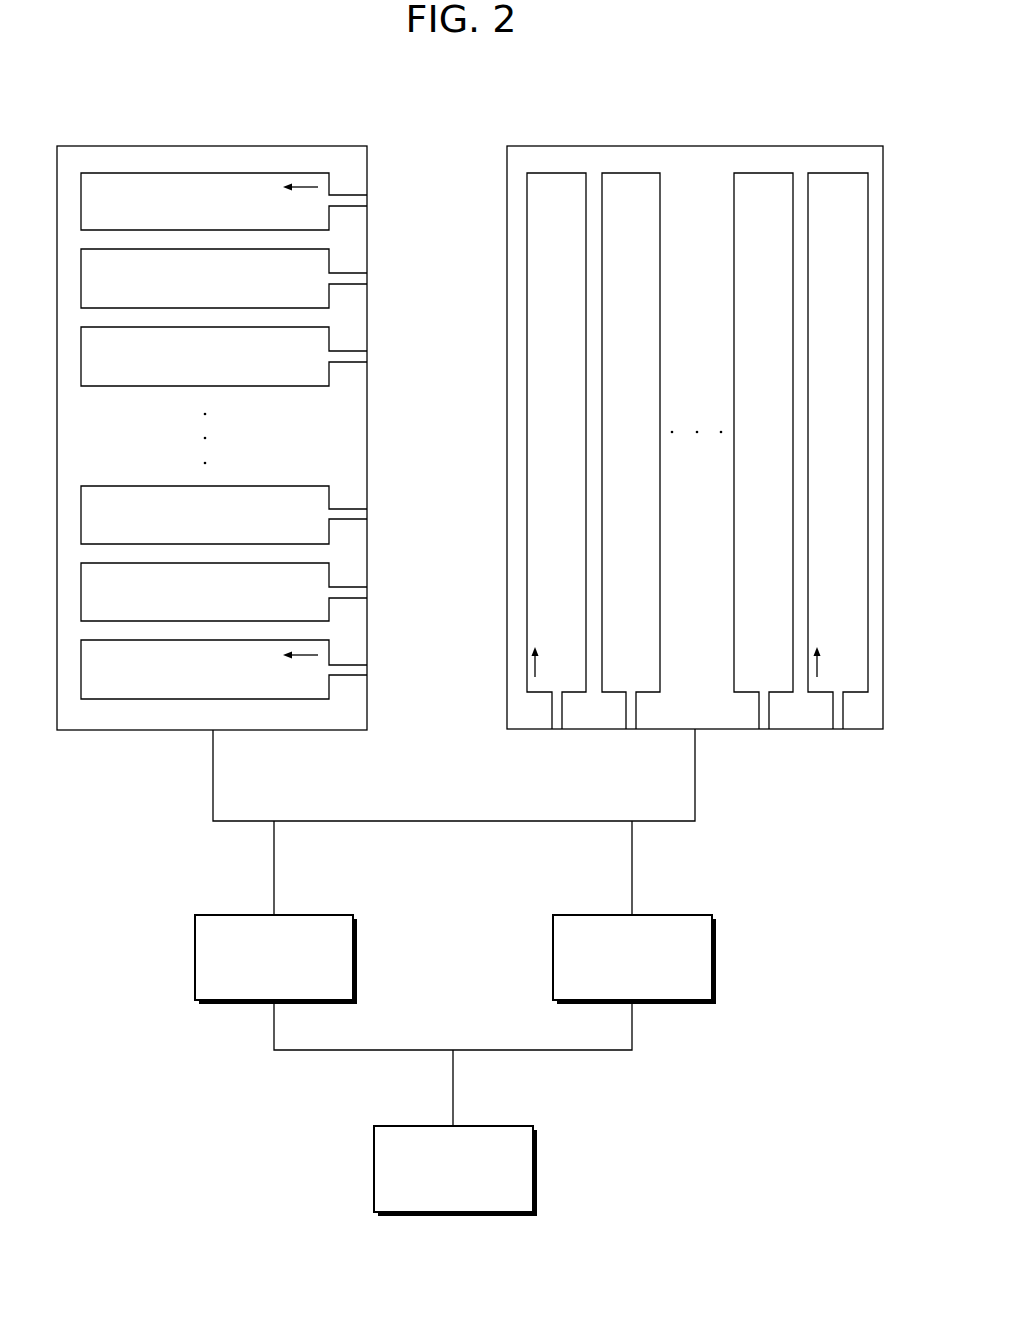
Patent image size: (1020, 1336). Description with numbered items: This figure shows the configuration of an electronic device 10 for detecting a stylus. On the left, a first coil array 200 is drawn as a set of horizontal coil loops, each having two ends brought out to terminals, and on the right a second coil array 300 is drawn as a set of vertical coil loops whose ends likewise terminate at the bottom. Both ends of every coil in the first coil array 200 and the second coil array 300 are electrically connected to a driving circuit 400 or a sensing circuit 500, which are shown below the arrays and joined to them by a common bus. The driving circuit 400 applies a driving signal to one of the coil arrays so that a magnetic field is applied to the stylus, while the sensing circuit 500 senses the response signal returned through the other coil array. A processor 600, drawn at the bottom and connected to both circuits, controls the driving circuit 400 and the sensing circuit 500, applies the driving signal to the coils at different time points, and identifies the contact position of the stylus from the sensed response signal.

The electronic device 10 is at (441, 1267).
The first coil array 200 is at (319, 146).
The second coil array 300 is at (834, 146).
The driving circuit 400 is at (318, 913).
The sensing circuit 500 is at (678, 913).
The processor 600 is at (498, 1124).